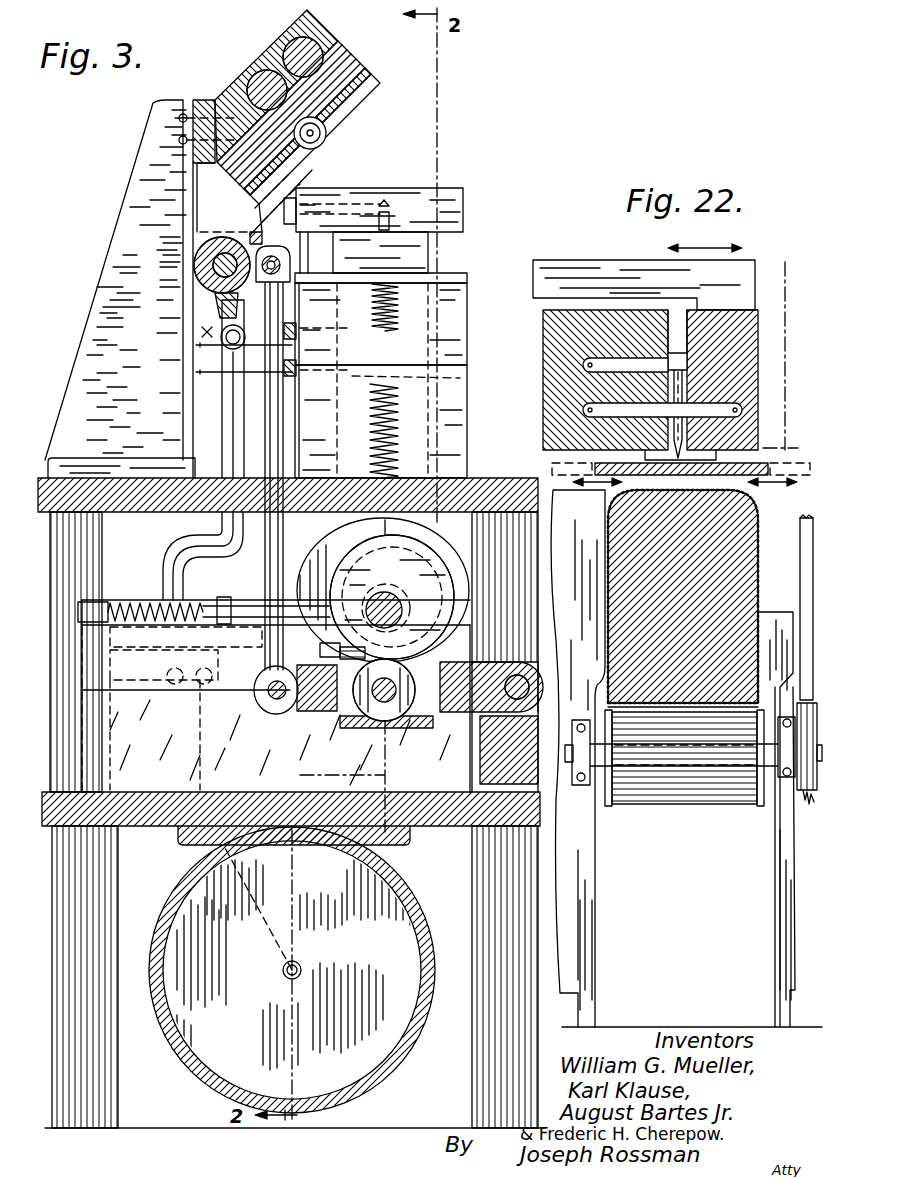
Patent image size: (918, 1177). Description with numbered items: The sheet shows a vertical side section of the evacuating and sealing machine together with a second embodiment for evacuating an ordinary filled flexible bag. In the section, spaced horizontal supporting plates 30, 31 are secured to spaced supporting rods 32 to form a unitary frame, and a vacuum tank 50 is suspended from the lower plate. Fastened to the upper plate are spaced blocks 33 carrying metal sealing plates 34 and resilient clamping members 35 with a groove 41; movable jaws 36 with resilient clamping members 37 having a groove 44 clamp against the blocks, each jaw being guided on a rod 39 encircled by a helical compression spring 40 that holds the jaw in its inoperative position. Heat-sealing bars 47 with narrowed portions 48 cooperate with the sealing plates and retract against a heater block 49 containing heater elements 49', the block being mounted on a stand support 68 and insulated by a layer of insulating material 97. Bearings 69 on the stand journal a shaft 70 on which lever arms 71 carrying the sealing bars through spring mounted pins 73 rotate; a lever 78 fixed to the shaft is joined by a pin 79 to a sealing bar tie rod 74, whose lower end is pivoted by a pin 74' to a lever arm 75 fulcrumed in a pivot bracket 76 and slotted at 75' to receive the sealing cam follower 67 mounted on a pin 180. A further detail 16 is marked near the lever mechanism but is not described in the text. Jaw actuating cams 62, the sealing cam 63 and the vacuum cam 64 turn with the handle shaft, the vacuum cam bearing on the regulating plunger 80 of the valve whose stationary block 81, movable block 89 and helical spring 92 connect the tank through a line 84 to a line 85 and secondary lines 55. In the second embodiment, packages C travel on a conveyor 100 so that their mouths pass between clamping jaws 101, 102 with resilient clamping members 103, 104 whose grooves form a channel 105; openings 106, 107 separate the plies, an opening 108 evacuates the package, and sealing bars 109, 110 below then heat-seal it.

In FIG. 3, the supporting plate 30 is at (497, 480).
In FIG. 3, the supporting plate 31 is at (440, 826).
In FIG. 3, the supporting rods 32 is at (103, 879).
In FIG. 3, the sealing block 33 is at (455, 421).
In FIG. 3, the metal sealing plate 34 is at (453, 311).
In FIG. 3, the clamping member 35 is at (454, 275).
In FIG. 3, the movable jaw 36 is at (464, 207).
In FIG. 3, the clamping member 37 is at (446, 238).
In FIG. 3, the rod 39 is at (462, 379).
In FIG. 3, the helical compression spring 40 is at (366, 427).
In FIG. 3, the groove 41 is at (386, 288).
In FIG. 3, the groove 44 is at (384, 226).
In FIG. 3, the heat-sealing bar 47 is at (356, 107).
In FIG. 3, the narrowed portion 48 is at (340, 120).
In FIG. 3, the heater block 49 is at (308, 86).
In FIG. 3, the heater elements 49' is at (275, 62).
In FIG. 3, the vacuum tank 50 is at (390, 1060).
In FIG. 3, the secondary line 55 is at (248, 372).
In FIG. 3, the jaw actuating cam 62 is at (428, 567).
In FIG. 3, the sealing cam 63 is at (324, 550).
In FIG. 3, the vacuum cam 64 is at (329, 650).
In FIG. 3, the sealing cam follower 67 is at (385, 704).
In FIG. 3, the stand support 68 is at (152, 386).
In FIG. 3, the bearing 69 is at (197, 290).
In FIG. 3, the shaft 70 is at (196, 262).
In FIG. 3, the lever arm 71 is at (232, 212).
In FIG. 3, the spring mounted pin 73 is at (324, 138).
In FIG. 3, the sealing bar tie rod 74 is at (223, 476).
In FIG. 3, the pin 74' is at (272, 701).
In FIG. 3, the lever arm 75 is at (491, 723).
In FIG. 3, the slot 75' is at (365, 709).
In FIG. 3, the pivot bracket 76 is at (539, 704).
In FIG. 3, the lever 78 is at (256, 254).
In FIG. 3, the pin 79 is at (282, 262).
In FIG. 3, the regulating plunger 80 is at (243, 608).
In FIG. 3, the stationary block 81 is at (127, 680).
In FIG. 3, the line 84 is at (212, 844).
In FIG. 3, the line 85 is at (230, 410).
In FIG. 3, the movable block 89 is at (252, 646).
In FIG. 3, the helical spring 92 is at (137, 604).
In FIG. 3, the insulating material 97 is at (212, 100).
In FIG. 3, the pin 16 is at (252, 182).
In FIG. 3, the pin 180 is at (388, 702).
In FIG. 22, the conveyor 100 is at (658, 808).
In FIG. 22, the clamping jaw 101 is at (560, 342).
In FIG. 22, the clamping jaw 102 is at (760, 303).
In FIG. 22, the resilient clamping member 103 is at (667, 322).
In FIG. 22, the resilient clamping member 104 is at (702, 316).
In FIG. 22, the channel 105 is at (670, 386).
In FIG. 22, the opening 106 is at (625, 463).
In FIG. 22, the opening 107 is at (690, 447).
In FIG. 22, the opening 108 is at (668, 358).
In FIG. 22, the sealing bar 109 is at (612, 438).
In FIG. 22, the sealing bar 110 is at (740, 478).
In FIG. 22, the package C is at (695, 603).